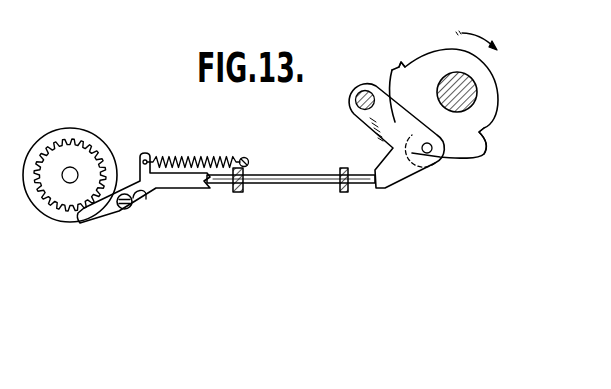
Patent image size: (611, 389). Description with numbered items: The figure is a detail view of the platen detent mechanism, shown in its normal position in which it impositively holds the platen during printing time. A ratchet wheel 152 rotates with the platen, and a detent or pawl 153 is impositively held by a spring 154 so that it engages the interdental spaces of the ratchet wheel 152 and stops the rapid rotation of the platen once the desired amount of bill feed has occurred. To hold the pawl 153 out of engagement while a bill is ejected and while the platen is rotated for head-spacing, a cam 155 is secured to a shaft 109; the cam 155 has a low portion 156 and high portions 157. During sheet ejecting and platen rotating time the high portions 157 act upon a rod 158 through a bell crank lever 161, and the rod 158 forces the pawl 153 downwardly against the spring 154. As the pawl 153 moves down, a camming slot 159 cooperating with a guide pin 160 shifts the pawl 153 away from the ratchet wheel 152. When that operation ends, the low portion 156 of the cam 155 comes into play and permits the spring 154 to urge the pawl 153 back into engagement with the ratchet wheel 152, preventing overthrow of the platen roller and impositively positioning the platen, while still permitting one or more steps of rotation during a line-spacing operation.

The shaft 109 is at (462, 90).
The ratchet wheel 152 is at (84, 147).
The detent or pawl 153 is at (97, 214).
The spring 154 is at (212, 156).
The cam 155 is at (484, 108).
The low portion 156 is at (426, 63).
The high portions 157 is at (396, 67).
The rod 158 is at (298, 184).
The camming slot 159 is at (141, 195).
The guide pin 160 is at (126, 210).
The bell crank lever 161 is at (403, 171).